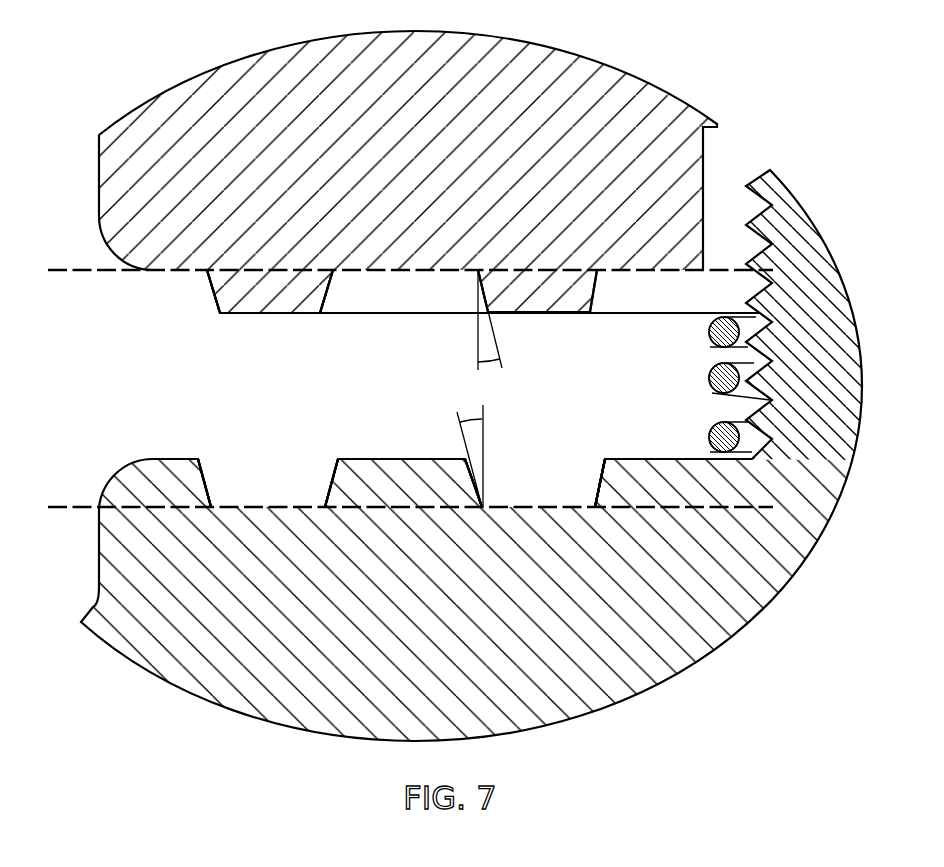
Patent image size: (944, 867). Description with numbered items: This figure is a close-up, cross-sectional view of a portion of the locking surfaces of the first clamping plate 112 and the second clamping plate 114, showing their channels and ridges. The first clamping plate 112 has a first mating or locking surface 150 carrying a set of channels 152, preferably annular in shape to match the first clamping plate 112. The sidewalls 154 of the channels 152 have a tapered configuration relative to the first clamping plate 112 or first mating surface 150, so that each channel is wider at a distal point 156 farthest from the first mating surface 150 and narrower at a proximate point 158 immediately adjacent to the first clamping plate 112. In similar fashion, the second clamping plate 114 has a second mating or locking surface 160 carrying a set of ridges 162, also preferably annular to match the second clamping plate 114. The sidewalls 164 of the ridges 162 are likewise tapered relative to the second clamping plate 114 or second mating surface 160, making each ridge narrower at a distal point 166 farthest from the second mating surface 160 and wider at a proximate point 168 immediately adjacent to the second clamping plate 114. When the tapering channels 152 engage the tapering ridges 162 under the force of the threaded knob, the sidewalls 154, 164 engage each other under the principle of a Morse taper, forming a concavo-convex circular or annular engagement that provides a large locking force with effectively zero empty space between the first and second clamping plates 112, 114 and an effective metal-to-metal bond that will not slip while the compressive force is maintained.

The first clamping plate 112 is at (99, 557).
The second clamping plate 114 is at (99, 191).
The first mating surface 150 is at (193, 447).
The channels 152 is at (270, 483).
The sidewalls of the channels 154 is at (312, 460).
The distal point 156 is at (538, 460).
The proximate point 158 is at (567, 505).
The second mating surface 160 is at (193, 305).
The ridges 162 is at (268, 292).
The sidewalls of the ridges 164 is at (326, 293).
The distal point 166 is at (268, 314).
The proximate point 168 is at (212, 306).